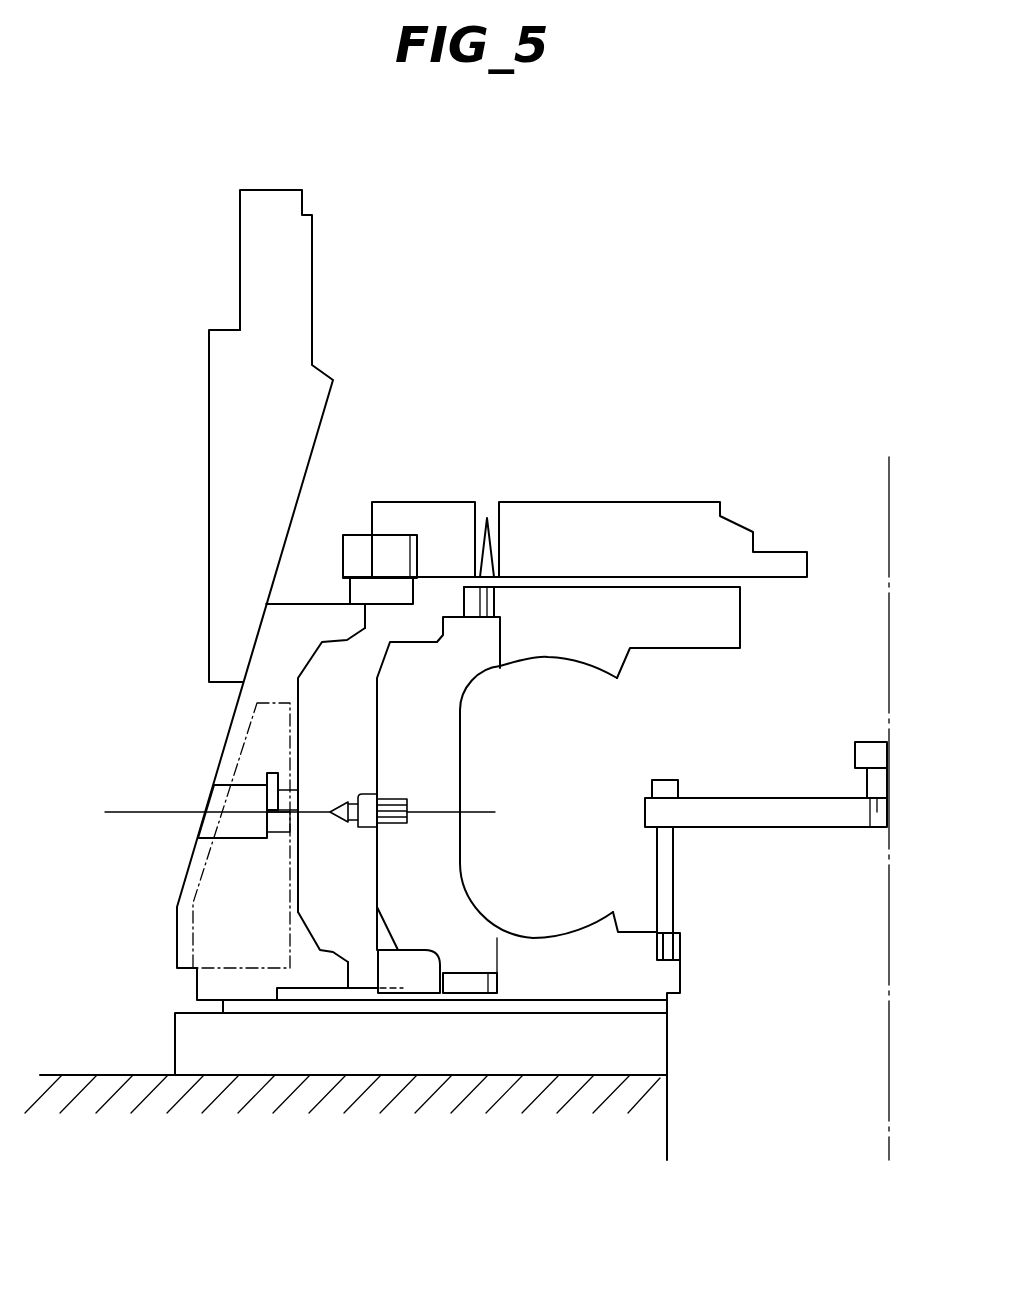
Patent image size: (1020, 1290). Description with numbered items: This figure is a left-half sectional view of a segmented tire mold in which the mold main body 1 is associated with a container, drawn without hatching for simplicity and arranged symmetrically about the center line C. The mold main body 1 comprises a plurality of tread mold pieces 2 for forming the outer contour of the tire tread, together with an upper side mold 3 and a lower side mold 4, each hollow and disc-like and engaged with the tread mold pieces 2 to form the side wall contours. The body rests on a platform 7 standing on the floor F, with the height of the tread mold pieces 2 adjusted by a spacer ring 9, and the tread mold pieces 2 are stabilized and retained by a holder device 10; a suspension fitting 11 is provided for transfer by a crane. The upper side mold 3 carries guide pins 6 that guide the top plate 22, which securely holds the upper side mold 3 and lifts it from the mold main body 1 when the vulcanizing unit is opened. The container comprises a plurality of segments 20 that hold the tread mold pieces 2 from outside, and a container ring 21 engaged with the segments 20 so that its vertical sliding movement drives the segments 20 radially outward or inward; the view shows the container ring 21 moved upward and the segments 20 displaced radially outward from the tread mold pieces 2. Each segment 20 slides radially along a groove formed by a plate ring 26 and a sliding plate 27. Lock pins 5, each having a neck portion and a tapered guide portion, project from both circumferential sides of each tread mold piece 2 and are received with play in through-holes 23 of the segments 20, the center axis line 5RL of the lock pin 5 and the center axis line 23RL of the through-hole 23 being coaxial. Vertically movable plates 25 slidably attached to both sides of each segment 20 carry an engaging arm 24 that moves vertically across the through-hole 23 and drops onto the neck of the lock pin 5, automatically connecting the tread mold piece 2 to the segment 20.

The mold main body 1 is at (462, 765).
The tread mold pieces 2 is at (438, 722).
The upper side mold 3 is at (558, 645).
The lower side mold 4 is at (547, 953).
The lock pins 5 is at (338, 798).
The center axis line of the lock pin 5RL is at (477, 812).
The guide pins 6 is at (485, 561).
The platform 7 is at (188, 1033).
The spacer ring 9 is at (463, 987).
The holder device 10 is at (418, 980).
The suspension fitting 11 is at (750, 788).
The segments 20 is at (300, 601).
The container ring 21 is at (303, 410).
The top plate 22 is at (620, 522).
The through-holes 23 is at (238, 800).
The center axis line of the through-hole 23RL is at (277, 784).
The engaging arm 24 is at (275, 772).
The vertically movable plates 25 is at (230, 878).
The plate ring 26 is at (262, 1012).
The sliding plate 27 is at (362, 988).
The center line C is at (892, 535).
The floor F is at (85, 1075).